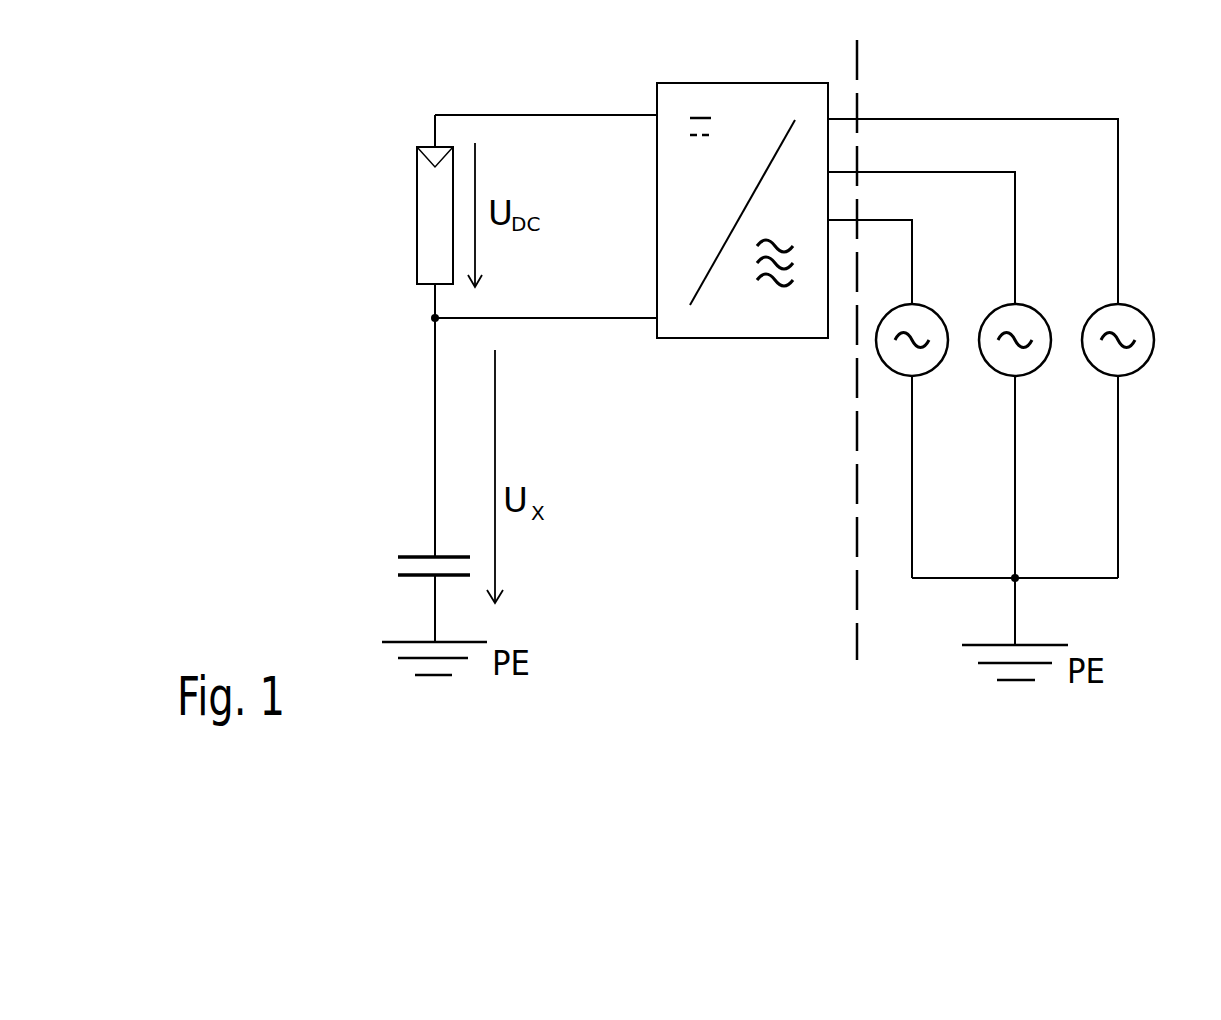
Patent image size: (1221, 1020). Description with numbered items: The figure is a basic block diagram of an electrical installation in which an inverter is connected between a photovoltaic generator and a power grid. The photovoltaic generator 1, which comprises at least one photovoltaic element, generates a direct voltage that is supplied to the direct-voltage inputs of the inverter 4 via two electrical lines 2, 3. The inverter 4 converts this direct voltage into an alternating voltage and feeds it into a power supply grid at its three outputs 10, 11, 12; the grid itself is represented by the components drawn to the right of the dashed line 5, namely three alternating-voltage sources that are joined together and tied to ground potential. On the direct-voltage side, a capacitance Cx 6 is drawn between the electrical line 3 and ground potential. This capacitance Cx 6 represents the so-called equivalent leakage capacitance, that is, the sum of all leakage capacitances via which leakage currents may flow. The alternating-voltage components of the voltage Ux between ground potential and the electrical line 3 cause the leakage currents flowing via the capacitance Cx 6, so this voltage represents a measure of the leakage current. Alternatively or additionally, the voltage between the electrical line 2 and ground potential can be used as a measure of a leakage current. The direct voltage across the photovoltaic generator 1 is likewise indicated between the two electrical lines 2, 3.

The photovoltaic generator 1 is at (417, 219).
The electrical line 2 is at (557, 113).
The electrical line 3 is at (497, 319).
The inverter 4 is at (740, 338).
The line 5 is at (861, 71).
The capacitance Cx 6 is at (422, 547).
The output 10 is at (860, 113).
The output 11 is at (840, 168).
The output 12 is at (840, 220).